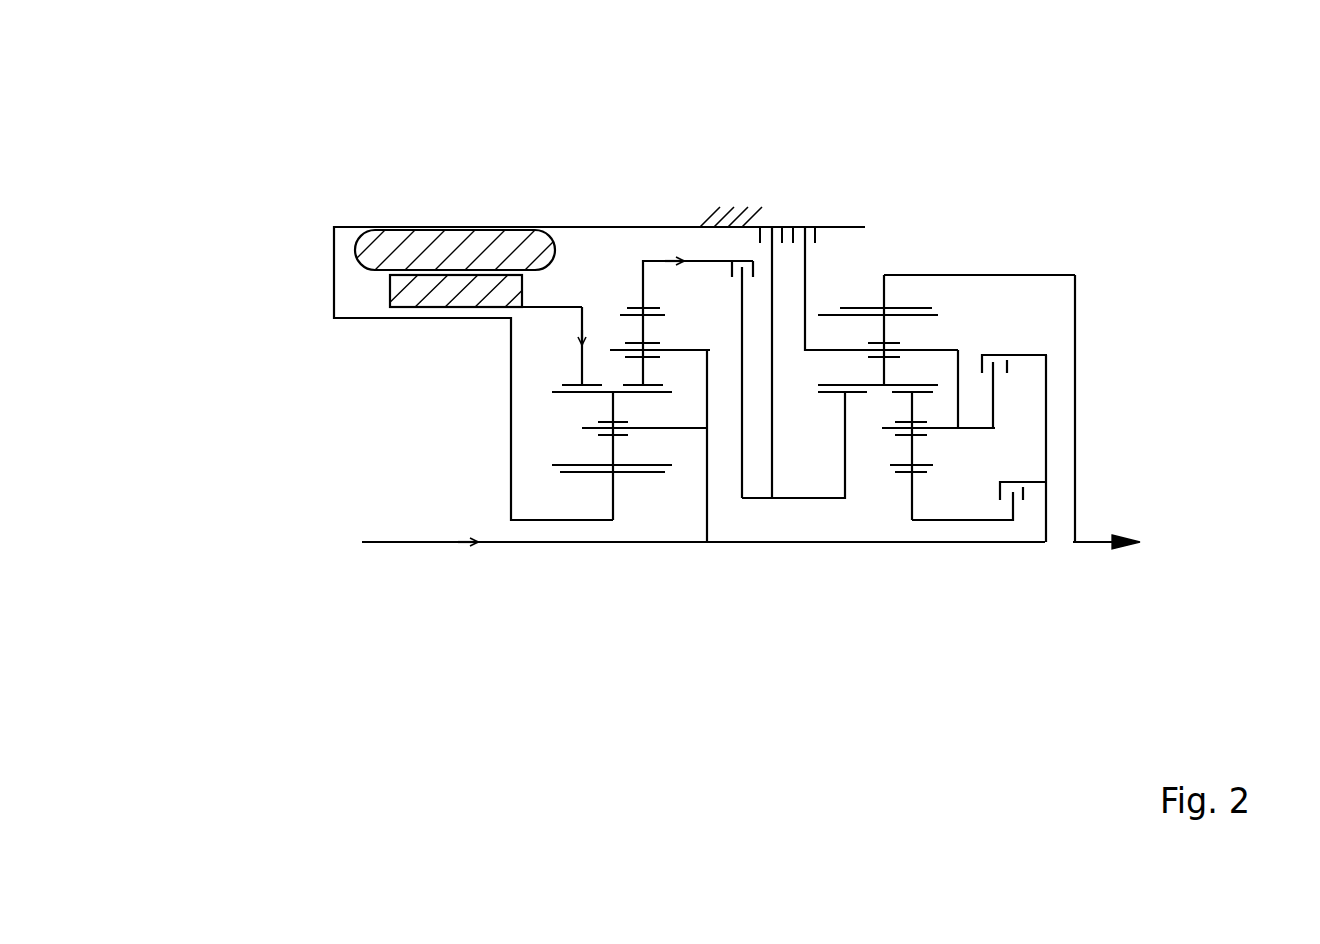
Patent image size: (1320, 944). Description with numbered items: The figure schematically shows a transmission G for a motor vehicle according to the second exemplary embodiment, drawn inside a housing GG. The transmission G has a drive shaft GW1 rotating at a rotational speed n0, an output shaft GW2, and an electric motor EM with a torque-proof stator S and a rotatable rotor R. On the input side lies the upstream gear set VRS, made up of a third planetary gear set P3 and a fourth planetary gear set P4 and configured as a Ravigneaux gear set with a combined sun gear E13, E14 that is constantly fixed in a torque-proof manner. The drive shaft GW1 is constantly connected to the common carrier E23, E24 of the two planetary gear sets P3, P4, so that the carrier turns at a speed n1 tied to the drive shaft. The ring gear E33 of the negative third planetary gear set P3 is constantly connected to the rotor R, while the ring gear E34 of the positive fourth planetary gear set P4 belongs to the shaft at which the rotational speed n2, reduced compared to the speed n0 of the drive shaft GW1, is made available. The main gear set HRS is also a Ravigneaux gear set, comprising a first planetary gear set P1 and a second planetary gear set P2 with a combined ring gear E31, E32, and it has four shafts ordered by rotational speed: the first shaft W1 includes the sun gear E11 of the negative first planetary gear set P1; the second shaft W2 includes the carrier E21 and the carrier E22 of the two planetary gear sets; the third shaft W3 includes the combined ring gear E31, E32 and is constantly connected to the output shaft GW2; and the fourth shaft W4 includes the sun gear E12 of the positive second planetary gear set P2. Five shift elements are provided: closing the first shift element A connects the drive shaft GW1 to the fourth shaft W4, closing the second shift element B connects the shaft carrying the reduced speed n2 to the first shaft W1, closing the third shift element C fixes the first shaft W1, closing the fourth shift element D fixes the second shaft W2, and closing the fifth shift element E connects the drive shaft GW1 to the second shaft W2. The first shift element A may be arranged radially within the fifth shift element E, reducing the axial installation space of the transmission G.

The transmission G is at (328, 410).
The transmission housing GG is at (332, 246).
The electric motor EM is at (437, 78).
The rotor R is at (427, 288).
The stator S is at (453, 257).
The ring gear of the fourth planetary gear set E34 is at (627, 306).
The third planetary gear set P3 is at (588, 196).
The fourth planetary gear set P4 is at (655, 196).
The upstream gear set VRS is at (682, 83).
The second shift element B is at (738, 258).
The third shift element C is at (772, 216).
The fourth shift element D is at (808, 220).
The carrier of the first planetary gear set E21 is at (822, 347).
The combined ring gear E31 is at (927, 197).
The combined ring gear E32 is at (913, 304).
The second shaft W2 is at (943, 347).
The third shaft W3 is at (1045, 273).
The fifth shift element E is at (1005, 347).
The carrier of the second planetary gear set E22 is at (960, 388).
The ring gear of the third planetary gear set E33 is at (568, 383).
The drive shaft GW1 is at (385, 545).
The combined sun gear E13 is at (571, 556).
The combined sun gear E14 is at (585, 477).
The common carrier E23 is at (683, 438).
The common carrier E24 is at (715, 412).
The first shaft W1 is at (782, 500).
The sun gear of the first planetary gear set E11 is at (832, 402).
The main gear set HRS is at (937, 652).
The first planetary gear set P1 is at (843, 560).
The second planetary gear set P2 is at (911, 560).
The sun gear of the second planetary gear set E12 is at (918, 477).
The fourth shaft W4 is at (983, 522).
The first shift element A is at (1022, 503).
The output shaft GW2 is at (1087, 545).
The rotational speed of the drive shaft n0 is at (474, 559).
The speed n1 is at (597, 346).
The reduced rotational speed n2 is at (698, 269).